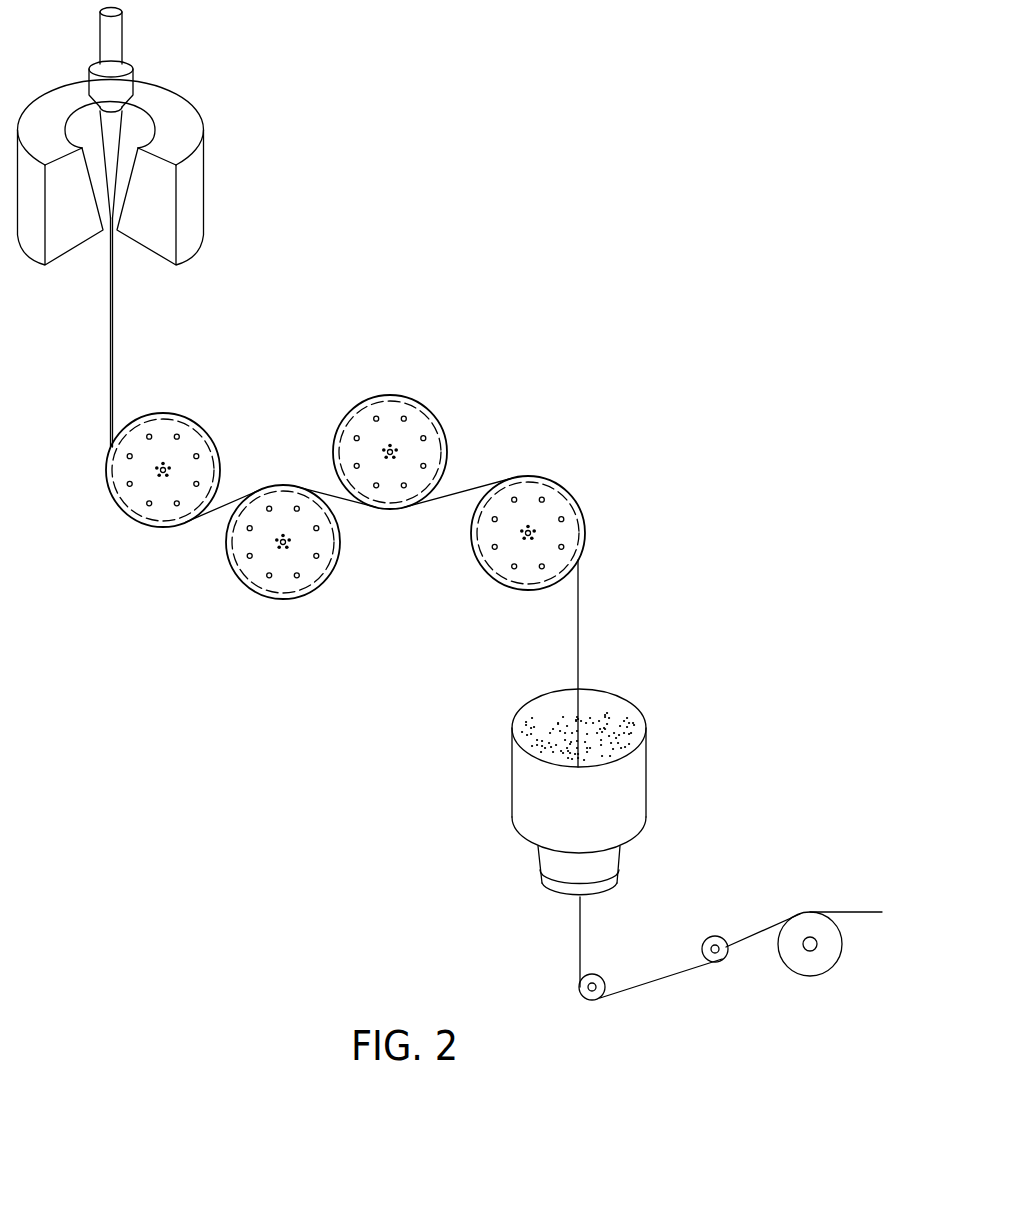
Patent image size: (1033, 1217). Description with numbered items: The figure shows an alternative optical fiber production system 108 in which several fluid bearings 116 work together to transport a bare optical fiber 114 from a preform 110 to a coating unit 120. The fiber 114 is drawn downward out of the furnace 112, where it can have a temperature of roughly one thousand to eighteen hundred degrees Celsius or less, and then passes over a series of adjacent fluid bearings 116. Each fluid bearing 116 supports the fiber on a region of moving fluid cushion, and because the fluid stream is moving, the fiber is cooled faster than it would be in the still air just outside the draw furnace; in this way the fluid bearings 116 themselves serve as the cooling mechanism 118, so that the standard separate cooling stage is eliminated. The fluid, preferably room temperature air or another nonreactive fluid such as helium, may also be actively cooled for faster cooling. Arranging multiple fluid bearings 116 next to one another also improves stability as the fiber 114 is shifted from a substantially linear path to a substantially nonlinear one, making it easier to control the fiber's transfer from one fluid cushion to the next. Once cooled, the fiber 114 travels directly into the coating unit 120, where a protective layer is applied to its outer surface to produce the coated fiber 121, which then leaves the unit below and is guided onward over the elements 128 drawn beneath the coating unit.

The optical fiber production system 108 is at (478, 143).
The preform 110 is at (115, 130).
The furnace 112 is at (203, 128).
The optical fiber 114 is at (112, 378).
The fluid bearing 116 is at (190, 412).
The cooling mechanism 118 is at (320, 358).
The coating unit 120 is at (650, 758).
The coated fiber 121 is at (580, 941).
The guide roller 128 is at (716, 936).